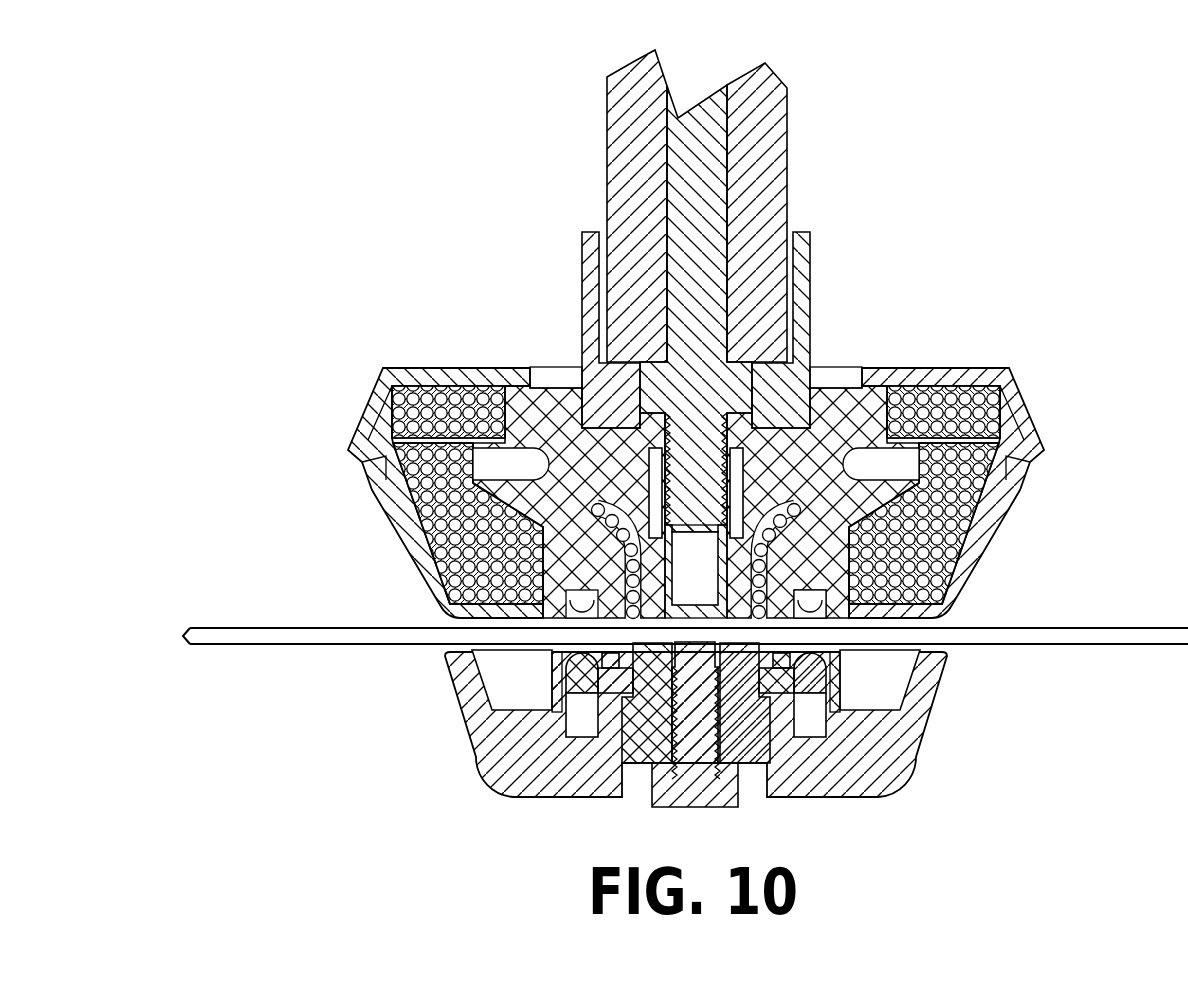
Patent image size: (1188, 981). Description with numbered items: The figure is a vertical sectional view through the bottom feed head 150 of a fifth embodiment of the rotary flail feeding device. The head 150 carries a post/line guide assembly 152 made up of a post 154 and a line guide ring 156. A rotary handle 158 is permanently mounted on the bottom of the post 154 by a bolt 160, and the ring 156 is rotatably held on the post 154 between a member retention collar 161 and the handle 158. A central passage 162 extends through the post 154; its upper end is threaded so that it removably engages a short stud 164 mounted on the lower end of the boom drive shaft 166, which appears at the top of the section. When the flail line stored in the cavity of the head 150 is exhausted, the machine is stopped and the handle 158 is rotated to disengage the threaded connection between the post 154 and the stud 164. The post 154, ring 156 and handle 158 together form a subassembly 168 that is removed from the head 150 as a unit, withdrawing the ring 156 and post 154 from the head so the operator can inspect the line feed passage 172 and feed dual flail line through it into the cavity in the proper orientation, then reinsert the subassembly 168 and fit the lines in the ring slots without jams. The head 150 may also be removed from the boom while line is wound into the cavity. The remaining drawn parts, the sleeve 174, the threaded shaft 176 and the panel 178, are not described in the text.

The bottom feed head 150 is at (288, 432).
The post/line guide assembly 152 is at (633, 705).
The post 154 is at (776, 720).
The line guide ring 156 is at (792, 668).
The rotary handle 158 is at (515, 770).
The bolt 160 is at (697, 808).
The member retention collar 161 is at (779, 655).
The central passage 162 is at (675, 588).
The short stud 164 is at (700, 501).
The boom drive shaft 166 is at (698, 120).
The subassembly 168 is at (545, 798).
The line feed passage 172 is at (560, 430).
The sleeve 174 is at (583, 272).
The threaded shaft 176 is at (722, 478).
The panel 178 is at (250, 624).